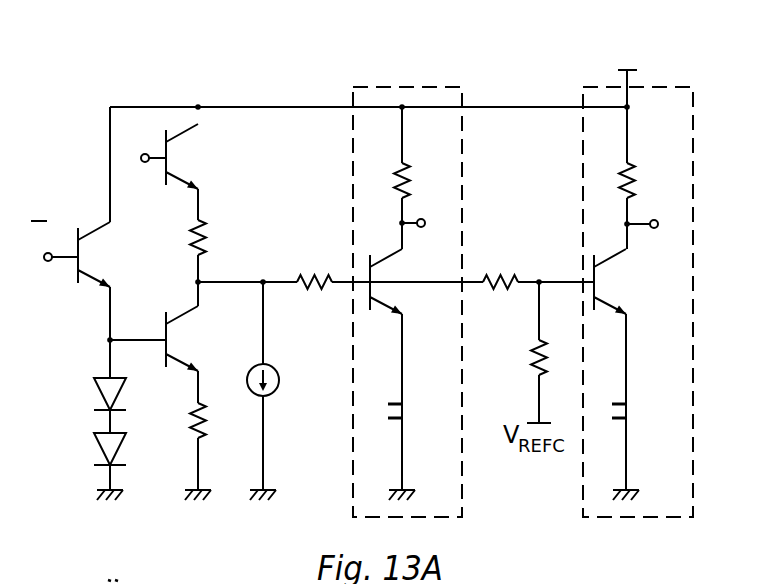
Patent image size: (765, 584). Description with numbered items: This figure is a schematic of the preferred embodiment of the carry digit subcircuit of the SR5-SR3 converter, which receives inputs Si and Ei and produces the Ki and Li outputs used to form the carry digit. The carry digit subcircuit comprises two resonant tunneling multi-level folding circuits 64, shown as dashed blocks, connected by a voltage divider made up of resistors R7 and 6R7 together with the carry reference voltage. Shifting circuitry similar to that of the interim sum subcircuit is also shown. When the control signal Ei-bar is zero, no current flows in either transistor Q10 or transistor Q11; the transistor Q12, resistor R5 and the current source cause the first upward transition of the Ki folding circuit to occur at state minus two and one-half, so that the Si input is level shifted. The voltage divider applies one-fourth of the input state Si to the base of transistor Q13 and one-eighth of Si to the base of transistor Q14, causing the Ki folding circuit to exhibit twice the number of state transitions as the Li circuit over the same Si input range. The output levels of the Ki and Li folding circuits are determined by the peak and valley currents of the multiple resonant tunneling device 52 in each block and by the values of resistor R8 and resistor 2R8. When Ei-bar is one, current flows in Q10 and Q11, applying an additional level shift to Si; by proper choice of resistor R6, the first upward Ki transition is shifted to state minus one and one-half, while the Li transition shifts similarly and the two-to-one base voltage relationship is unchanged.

The resonant tunneling multi-level folding circuit 64 is at (502, 259).
The multiple resonant tunneling device 52 is at (410, 410).
The transistor Q10 is at (82, 242).
The transistor Q11 is at (196, 342).
The transistor Q12 is at (178, 162).
The transistor Q13 is at (407, 325).
The transistor Q14 is at (623, 326).
The resistor R5 is at (216, 251).
The resistor R6 is at (216, 446).
The resistor R7 is at (517, 333).
The resistor 6R7 is at (316, 267).
The resistor R8 is at (421, 176).
The resistor 2R8 is at (648, 178).